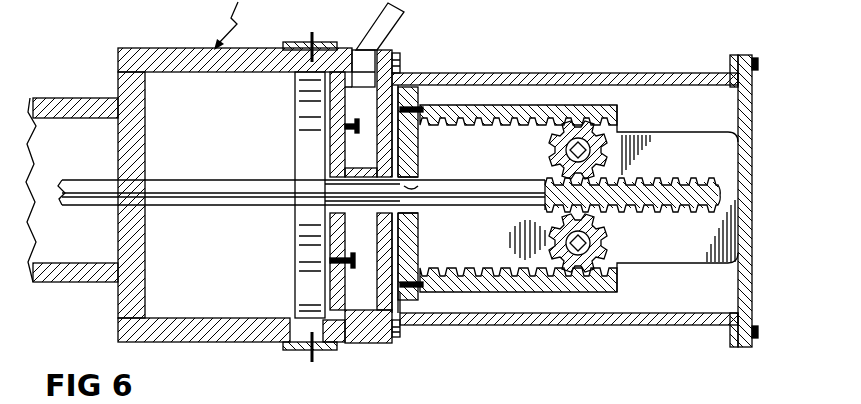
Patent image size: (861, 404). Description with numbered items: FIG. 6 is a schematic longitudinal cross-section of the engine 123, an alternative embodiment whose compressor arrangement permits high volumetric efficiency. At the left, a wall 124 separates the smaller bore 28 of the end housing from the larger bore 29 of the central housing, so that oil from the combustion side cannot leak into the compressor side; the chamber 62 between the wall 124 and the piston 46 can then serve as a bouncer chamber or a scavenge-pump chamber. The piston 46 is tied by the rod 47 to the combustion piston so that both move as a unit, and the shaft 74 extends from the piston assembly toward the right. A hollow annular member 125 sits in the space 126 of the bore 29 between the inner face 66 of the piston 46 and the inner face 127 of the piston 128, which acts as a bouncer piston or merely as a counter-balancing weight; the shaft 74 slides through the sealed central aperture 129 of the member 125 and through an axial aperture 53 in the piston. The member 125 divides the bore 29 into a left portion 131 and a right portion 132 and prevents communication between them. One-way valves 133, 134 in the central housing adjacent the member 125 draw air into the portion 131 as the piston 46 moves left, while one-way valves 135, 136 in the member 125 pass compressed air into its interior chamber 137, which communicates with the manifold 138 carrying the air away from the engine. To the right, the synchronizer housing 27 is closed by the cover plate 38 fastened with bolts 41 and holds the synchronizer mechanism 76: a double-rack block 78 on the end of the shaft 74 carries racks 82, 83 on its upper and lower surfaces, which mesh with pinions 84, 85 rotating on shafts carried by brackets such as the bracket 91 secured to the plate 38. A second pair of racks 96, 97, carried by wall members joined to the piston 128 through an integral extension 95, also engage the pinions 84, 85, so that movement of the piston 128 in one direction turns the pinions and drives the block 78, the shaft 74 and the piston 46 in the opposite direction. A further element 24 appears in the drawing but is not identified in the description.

The engine 123 is at (70, 157).
The wall 124 is at (112, 127).
The bore 28 is at (76, 262).
The chamber 62 is at (235, 195).
The left portion of bore 131 is at (241, 312).
The rod 47 is at (178, 190).
The shaft 74 is at (476, 186).
The central aperture 129 is at (338, 201).
The piston 46 is at (297, 158).
The one-way valve 133 is at (313, 40).
The one-way valve 134 is at (312, 352).
The space 126 is at (337, 88).
The inner face of piston 66 is at (330, 99).
The manifold 138 is at (396, 12).
The one-way valve 135 is at (345, 126).
The interior chamber 137 is at (344, 278).
The hollow annular member 125 is at (326, 244).
The one-way valve 136 is at (357, 262).
The piston 128 is at (412, 92).
The axial aperture 53 is at (412, 187).
The right portion of bore 132 is at (413, 340).
The inner face of piston 127 is at (412, 329).
The rack 96 is at (536, 110).
The rack 97 is at (527, 283).
The rack 82 is at (640, 198).
The double-rack block 78 is at (695, 185).
The rack 83 is at (698, 220).
The pinion 84 is at (557, 156).
The pinion 85 is at (600, 251).
The integral extension 95 is at (500, 242).
The synchronizer housing 27 is at (599, 198).
The bore 29 is at (577, 80).
The bottom wall 24 is at (662, 330).
The cover plate 38 is at (753, 141).
The bolts 41 is at (759, 66).
The synchronizer mechanism 76 is at (694, 130).
The bracket 91 is at (672, 263).